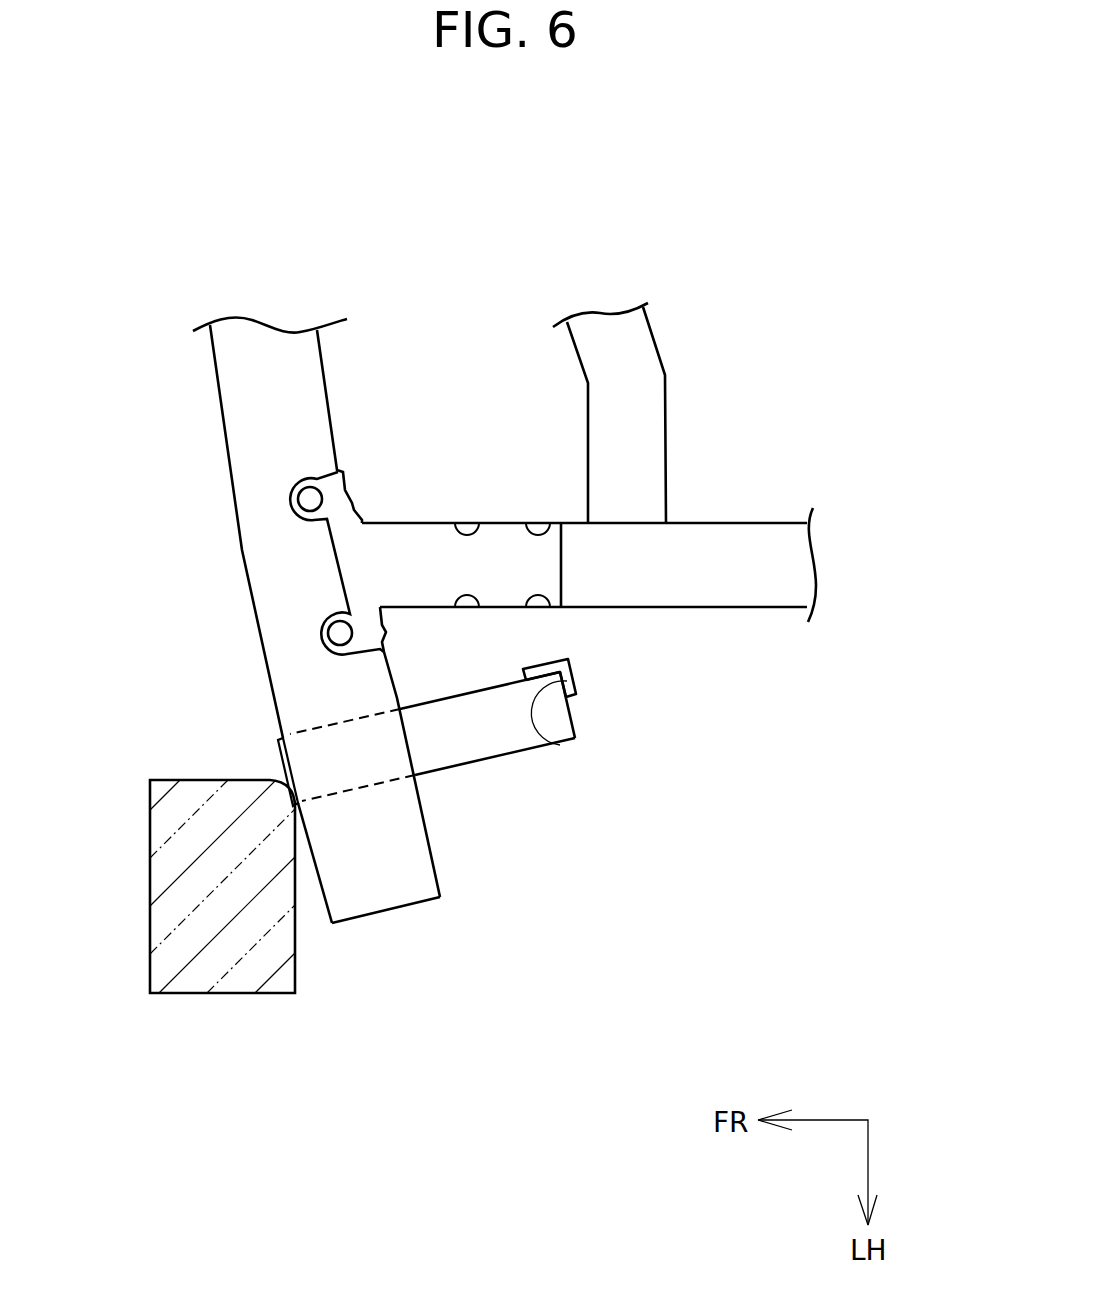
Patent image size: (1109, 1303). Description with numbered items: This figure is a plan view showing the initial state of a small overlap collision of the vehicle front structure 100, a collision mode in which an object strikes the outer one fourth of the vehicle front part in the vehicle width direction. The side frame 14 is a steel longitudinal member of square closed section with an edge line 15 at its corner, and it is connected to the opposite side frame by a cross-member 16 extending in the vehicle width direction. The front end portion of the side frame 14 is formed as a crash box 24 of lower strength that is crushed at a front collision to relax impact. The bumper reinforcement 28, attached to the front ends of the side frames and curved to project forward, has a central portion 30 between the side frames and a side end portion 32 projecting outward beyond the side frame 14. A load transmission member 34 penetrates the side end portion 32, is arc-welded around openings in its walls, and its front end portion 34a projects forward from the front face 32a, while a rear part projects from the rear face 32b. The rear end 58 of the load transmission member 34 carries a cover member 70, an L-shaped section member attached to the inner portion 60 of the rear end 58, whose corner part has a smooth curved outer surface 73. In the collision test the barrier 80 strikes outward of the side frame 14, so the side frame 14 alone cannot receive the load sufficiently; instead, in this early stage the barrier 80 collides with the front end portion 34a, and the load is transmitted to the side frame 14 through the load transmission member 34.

The vehicle front structure 100 is at (845, 250).
The side frame 14 is at (644, 515).
The edge line 15 is at (753, 610).
The cross-member 16 is at (668, 415).
The crash box 24 is at (498, 522).
The bumper reinforcement 28 is at (320, 372).
The central portion 30 is at (210, 360).
The side end portion 32 is at (471, 890).
The front face 32a is at (332, 918).
The rear face 32b is at (440, 865).
The load transmission member 34 is at (338, 761).
The front end portion 34a is at (283, 755).
The rear end 58 is at (577, 722).
The inner portion 60 is at (550, 745).
The cover member 70 is at (575, 675).
The outer surface 73 is at (567, 652).
The barrier 80 is at (170, 995).